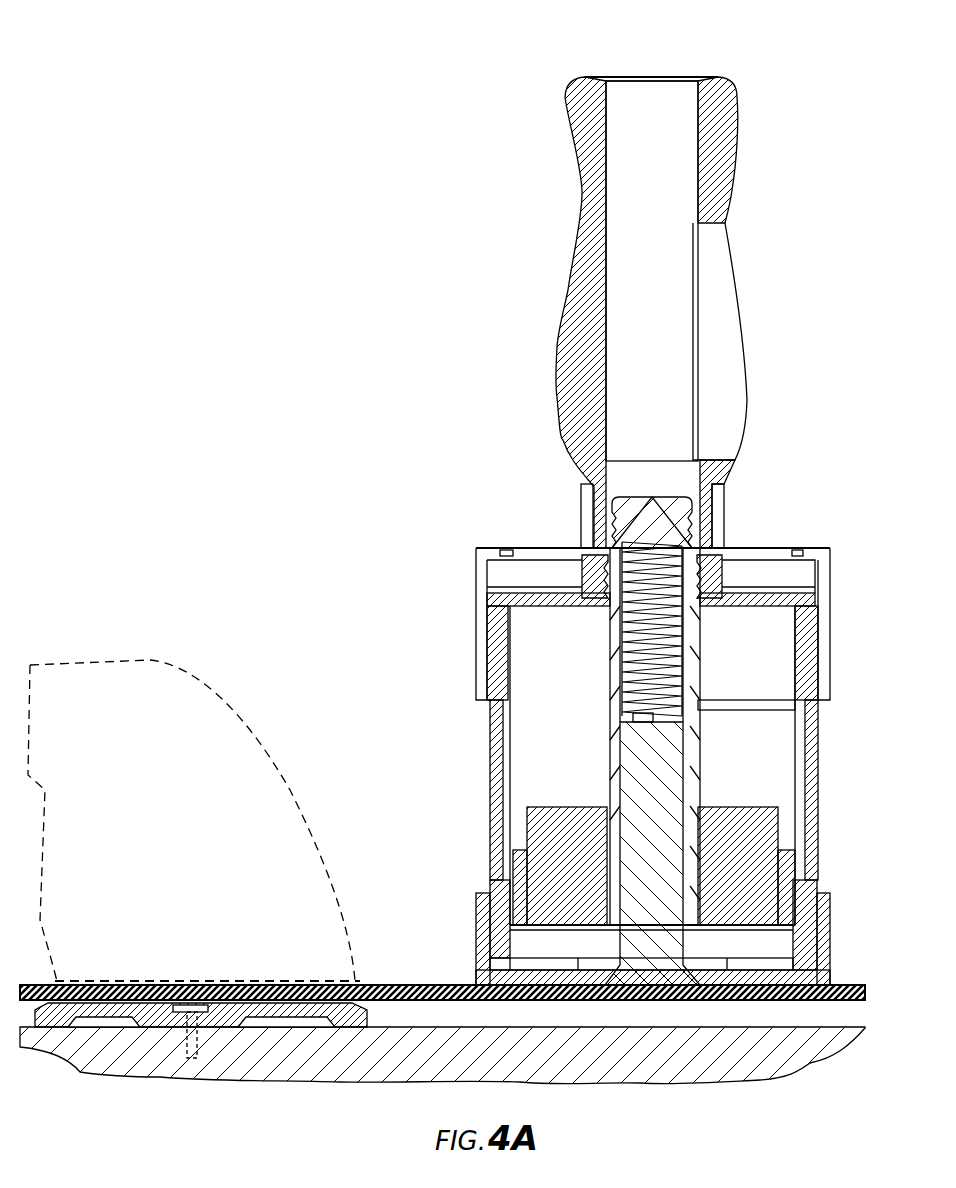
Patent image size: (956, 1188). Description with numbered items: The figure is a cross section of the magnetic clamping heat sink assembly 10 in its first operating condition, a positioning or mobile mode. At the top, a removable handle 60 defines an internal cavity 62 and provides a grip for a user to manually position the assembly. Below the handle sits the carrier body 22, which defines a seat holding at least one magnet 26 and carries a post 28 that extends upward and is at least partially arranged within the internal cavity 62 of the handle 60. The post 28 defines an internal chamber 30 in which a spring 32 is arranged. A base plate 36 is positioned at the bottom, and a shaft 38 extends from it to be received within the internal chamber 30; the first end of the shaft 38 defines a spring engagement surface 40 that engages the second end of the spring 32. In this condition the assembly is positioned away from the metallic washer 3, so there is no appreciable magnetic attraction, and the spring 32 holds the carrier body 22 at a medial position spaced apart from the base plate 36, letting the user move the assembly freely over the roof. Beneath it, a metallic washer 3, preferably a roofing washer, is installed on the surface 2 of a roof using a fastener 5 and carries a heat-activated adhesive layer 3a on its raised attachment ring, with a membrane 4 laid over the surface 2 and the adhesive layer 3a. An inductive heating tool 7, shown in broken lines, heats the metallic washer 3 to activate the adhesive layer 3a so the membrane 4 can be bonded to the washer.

The magnetic clamping heat sink assembly 10 is at (532, 140).
The handle 60 is at (727, 108).
The internal cavity 62 is at (648, 112).
The post 28 is at (657, 517).
The internal chamber 30 is at (653, 521).
The spring 32 is at (735, 565).
The carrier body 22 is at (787, 876).
The base plate 36 is at (800, 978).
The shaft 38 is at (667, 834).
The spring engagement surface 40 is at (662, 731).
The magnet 26 is at (755, 820).
The membrane 4 is at (803, 1000).
The surface 2 is at (778, 1066).
The metallic washer 3 is at (335, 1030).
The heat-activated adhesive layer 3a is at (325, 985).
The fastener 5 is at (197, 1040).
The inductive heating tool 7 is at (190, 718).